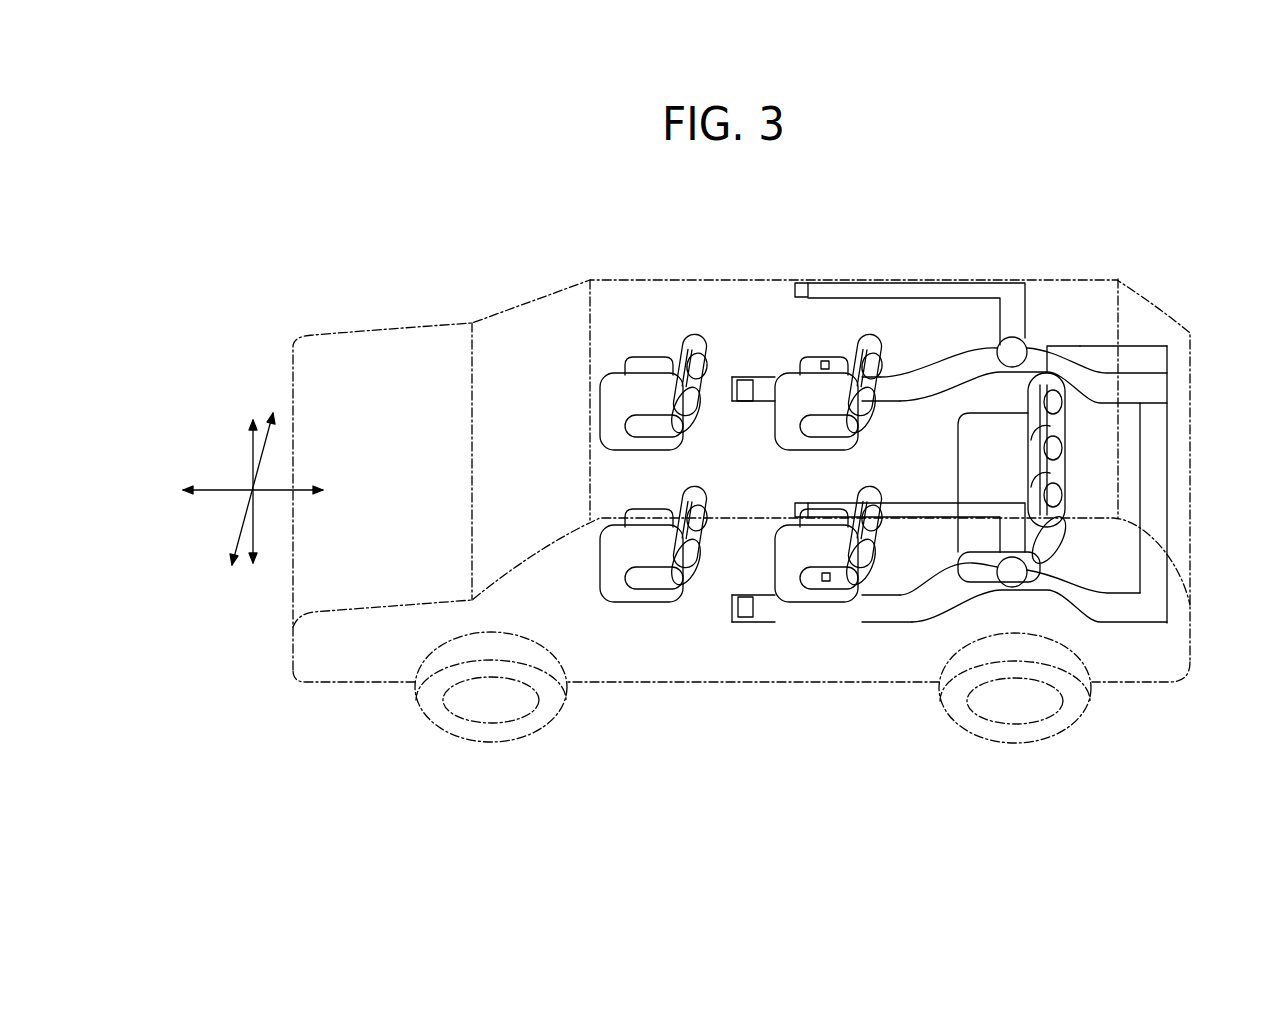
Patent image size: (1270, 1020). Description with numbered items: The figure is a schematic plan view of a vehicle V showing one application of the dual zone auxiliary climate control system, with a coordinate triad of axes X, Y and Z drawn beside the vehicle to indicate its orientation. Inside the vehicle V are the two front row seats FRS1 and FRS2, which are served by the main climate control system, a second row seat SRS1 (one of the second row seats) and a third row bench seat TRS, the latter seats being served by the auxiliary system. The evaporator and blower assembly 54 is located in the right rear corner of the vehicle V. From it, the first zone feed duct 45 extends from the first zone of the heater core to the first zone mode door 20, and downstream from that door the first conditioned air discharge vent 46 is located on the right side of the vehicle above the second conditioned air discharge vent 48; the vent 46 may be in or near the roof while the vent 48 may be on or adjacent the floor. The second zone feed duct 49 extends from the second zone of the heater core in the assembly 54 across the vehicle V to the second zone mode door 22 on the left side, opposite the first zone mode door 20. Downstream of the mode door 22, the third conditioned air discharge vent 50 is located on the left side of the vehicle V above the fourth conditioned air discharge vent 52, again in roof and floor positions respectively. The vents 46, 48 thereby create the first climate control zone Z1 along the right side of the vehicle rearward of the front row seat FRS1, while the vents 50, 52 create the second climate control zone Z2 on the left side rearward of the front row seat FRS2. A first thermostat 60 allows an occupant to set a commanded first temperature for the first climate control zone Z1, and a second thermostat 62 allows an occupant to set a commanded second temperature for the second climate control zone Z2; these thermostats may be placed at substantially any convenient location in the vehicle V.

The vehicle V is at (610, 276).
The vehicle longitudinal direction axis X is at (203, 495).
The vehicle width direction axis Y is at (252, 450).
The vehicle vertical direction axis Z is at (242, 537).
The front row seat FRS1 is at (648, 385).
The front row seat FRS2 is at (617, 553).
The second row seat SRS1 is at (877, 358).
The third row bench seat TRS is at (980, 455).
The first climate control zone Z1 is at (866, 330).
The second climate control zone Z2 is at (898, 570).
The first zone mode door 20 is at (1037, 353).
The second zone mode door 22 is at (1020, 587).
The first zone feed duct 45 is at (1038, 352).
The first conditioned air discharge vent 46 is at (800, 282).
The second conditioned air discharge vent 48 is at (740, 378).
The second zone feed duct 49 is at (1166, 503).
The third conditioned air discharge vent 50 is at (800, 505).
The fourth conditioned air discharge vent 52 is at (747, 618).
The evaporator and blower assembly 54 is at (1140, 357).
The first thermostat 60 is at (826, 360).
The second thermostat 62 is at (825, 582).